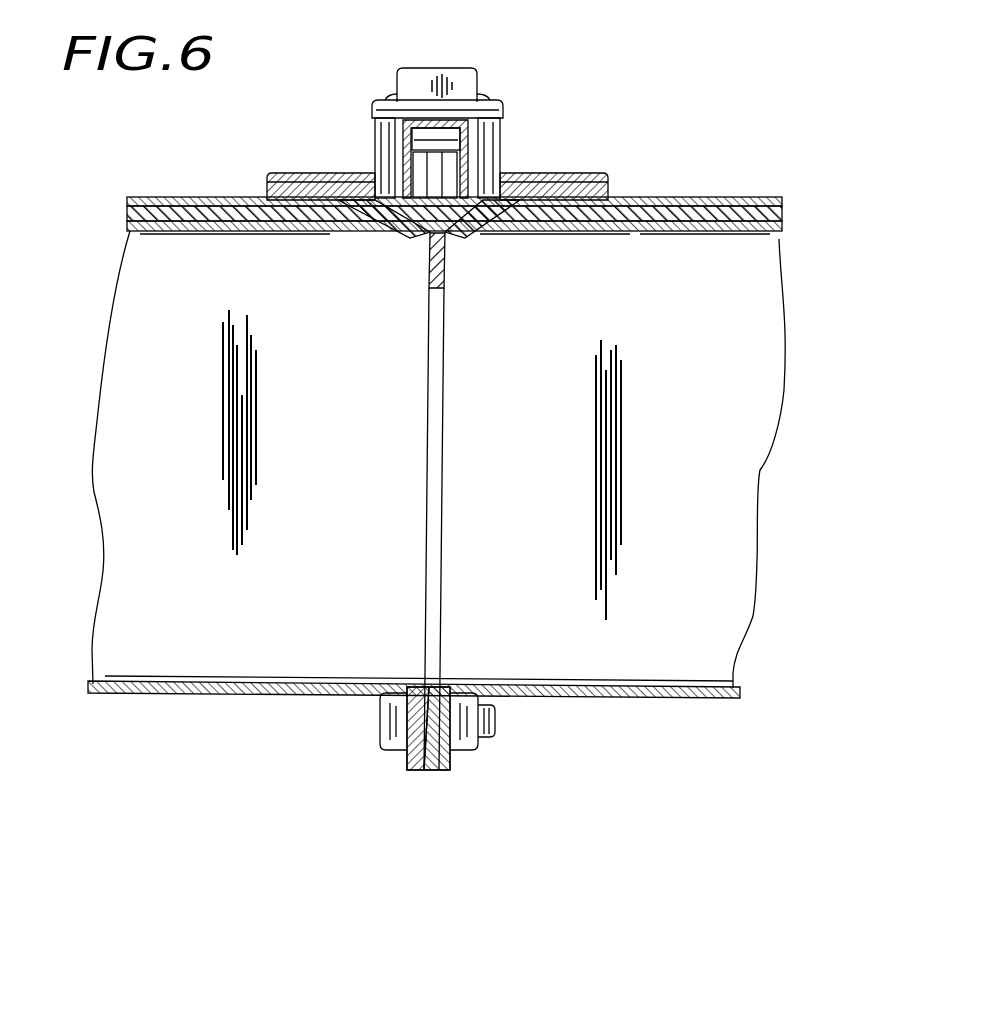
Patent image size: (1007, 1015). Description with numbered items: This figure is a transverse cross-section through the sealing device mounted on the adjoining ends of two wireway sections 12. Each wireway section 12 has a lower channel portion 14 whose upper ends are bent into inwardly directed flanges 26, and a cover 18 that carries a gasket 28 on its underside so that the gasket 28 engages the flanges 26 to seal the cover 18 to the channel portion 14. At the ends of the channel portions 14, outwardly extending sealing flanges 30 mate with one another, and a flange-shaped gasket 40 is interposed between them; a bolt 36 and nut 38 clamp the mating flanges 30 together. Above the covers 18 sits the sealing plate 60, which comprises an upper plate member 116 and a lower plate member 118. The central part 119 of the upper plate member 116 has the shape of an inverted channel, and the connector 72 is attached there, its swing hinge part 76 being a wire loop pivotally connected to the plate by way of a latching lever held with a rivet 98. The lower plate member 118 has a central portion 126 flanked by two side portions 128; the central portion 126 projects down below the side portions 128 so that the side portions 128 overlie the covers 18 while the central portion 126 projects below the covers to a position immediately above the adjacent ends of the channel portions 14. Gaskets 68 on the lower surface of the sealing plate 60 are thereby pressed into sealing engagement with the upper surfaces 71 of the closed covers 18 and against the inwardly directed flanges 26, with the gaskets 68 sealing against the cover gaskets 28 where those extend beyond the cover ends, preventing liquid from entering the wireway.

The wireway section 12 is at (200, 691).
The lower channel portion 14 is at (135, 220).
The cover 18 is at (222, 200).
The inwardly directed flange 26 is at (312, 234).
The gasket 28 is at (168, 212).
The sealing flange 30 is at (413, 771).
The bolt 36 is at (380, 755).
The nut 38 is at (465, 752).
The gasket 40 is at (444, 265).
The sealing plate 60 is at (495, 107).
The gasket 68 is at (592, 226).
The upper surface 71 is at (473, 221).
The connector 72 is at (460, 83).
The swing hinge part 76 is at (503, 168).
The rivet 98 is at (506, 108).
The upper plate member 116 is at (370, 170).
The lower plate member 118 is at (353, 234).
The central part 119 is at (498, 150).
The central portion 126 is at (487, 238).
The side portion 128 is at (327, 174).